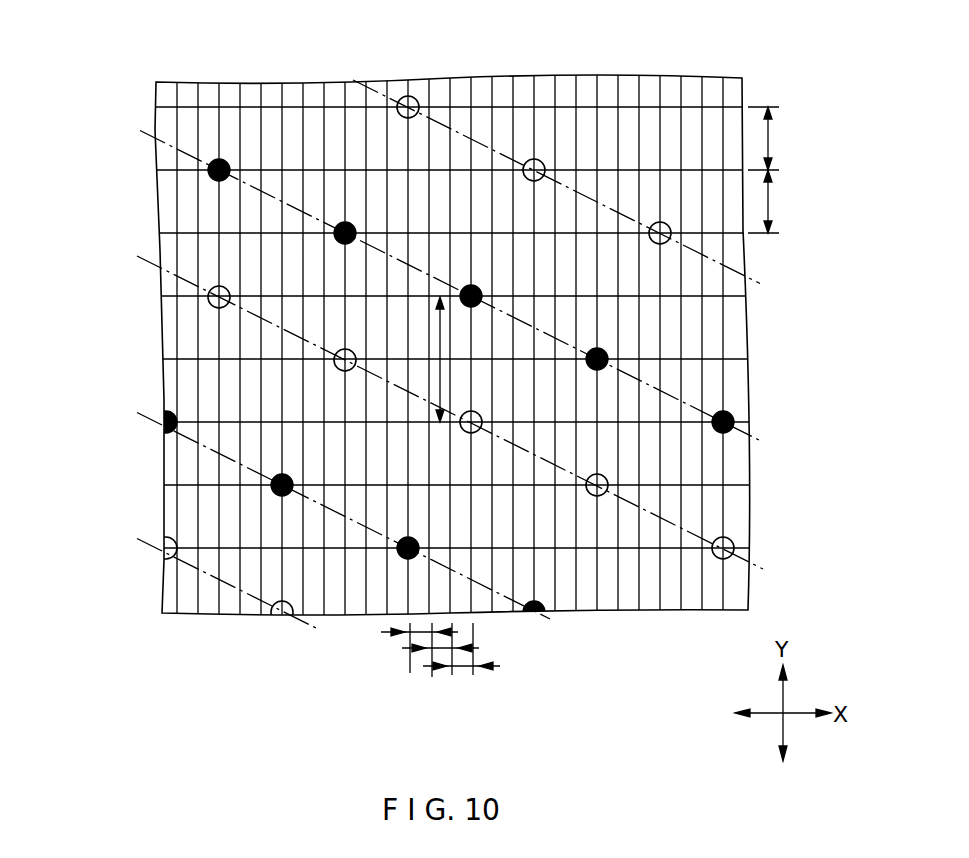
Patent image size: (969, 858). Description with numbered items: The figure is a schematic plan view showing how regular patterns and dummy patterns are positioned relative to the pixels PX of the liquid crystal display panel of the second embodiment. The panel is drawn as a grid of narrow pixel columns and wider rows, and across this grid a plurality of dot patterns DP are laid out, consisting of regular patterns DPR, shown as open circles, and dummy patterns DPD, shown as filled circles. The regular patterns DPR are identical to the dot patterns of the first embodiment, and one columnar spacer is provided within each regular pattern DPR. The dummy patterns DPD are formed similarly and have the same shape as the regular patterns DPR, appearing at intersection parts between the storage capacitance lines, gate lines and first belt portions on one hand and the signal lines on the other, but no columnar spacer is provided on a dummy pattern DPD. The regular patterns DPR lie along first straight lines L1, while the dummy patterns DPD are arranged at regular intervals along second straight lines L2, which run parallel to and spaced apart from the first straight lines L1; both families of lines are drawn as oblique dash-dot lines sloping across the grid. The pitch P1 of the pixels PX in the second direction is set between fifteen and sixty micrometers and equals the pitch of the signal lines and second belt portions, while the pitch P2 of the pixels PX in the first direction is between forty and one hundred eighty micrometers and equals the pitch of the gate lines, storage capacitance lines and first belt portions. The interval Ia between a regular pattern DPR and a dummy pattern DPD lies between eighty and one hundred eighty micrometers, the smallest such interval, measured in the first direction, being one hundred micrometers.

The pixel PX is at (295, 107).
The first straight line L1 is at (476, 132).
The second straight line L2 is at (173, 148).
The dot pattern DP is at (436, 362).
The dummy pattern DPD is at (404, 540).
The regular pattern DPR is at (661, 222).
The interval Ia is at (440, 343).
The pitch P1 is at (421, 635).
The pitch P2 is at (770, 137).